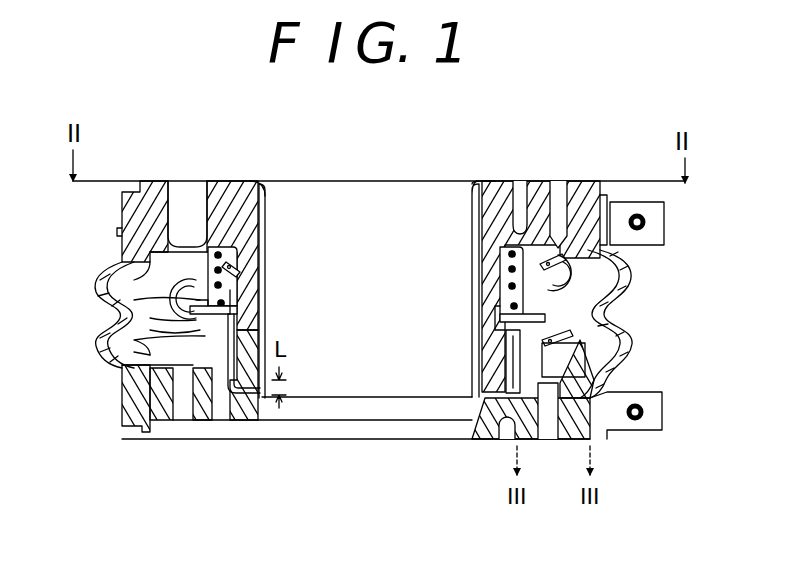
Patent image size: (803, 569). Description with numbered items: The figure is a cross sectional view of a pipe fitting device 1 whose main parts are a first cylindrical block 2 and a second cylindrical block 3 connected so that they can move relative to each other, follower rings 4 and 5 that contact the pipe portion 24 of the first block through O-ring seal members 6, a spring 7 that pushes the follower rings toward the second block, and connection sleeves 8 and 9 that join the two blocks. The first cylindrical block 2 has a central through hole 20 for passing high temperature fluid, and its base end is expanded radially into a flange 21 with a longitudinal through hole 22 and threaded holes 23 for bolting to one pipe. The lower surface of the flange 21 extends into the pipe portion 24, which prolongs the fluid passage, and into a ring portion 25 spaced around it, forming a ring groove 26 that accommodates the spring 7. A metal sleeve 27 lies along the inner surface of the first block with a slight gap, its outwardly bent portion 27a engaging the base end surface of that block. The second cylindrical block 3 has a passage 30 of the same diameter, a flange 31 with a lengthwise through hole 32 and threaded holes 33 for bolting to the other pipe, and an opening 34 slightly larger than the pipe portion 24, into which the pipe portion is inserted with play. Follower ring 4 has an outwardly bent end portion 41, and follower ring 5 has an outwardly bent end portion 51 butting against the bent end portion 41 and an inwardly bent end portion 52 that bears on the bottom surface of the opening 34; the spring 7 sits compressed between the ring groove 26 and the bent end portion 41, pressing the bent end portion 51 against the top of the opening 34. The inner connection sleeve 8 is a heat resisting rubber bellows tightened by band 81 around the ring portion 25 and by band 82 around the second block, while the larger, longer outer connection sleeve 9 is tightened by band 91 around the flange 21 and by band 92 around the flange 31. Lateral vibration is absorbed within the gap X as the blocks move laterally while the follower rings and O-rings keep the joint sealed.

The pipe fitting device 1 is at (658, 304).
The first cylindrical block 2 is at (496, 212).
The second cylindrical block 3 is at (490, 442).
The follower ring 4 is at (500, 280).
The follower ring 5 is at (492, 350).
The seal member 6 is at (242, 302).
The spring 7 is at (244, 268).
The inner connection sleeve 8 is at (618, 322).
The outer connection sleeve 9 is at (632, 348).
The through hole 20 is at (390, 200).
The flange 21 is at (584, 200).
The through hole 22 is at (192, 205).
The threaded holes 23 is at (558, 192).
The pipe portion 24 is at (482, 330).
The ring portion 25 is at (208, 250).
The ring groove 26 is at (232, 262).
The metal sleeve 27 is at (472, 262).
The bent portion 27a is at (478, 184).
The passage 30 is at (382, 442).
The flange 31 is at (602, 383).
The through hole 32 is at (195, 440).
The threaded holes 33 is at (546, 442).
The opening 34 is at (218, 400).
The outwardly bent end portion 41 is at (158, 294).
The outwardly bent end portion 51 is at (150, 326).
The inwardly bent end portion 52 is at (244, 435).
The band 81 is at (126, 272).
The band 82 is at (128, 336).
The band 91 is at (122, 215).
The band 92 is at (122, 418).
The gap X is at (118, 362).